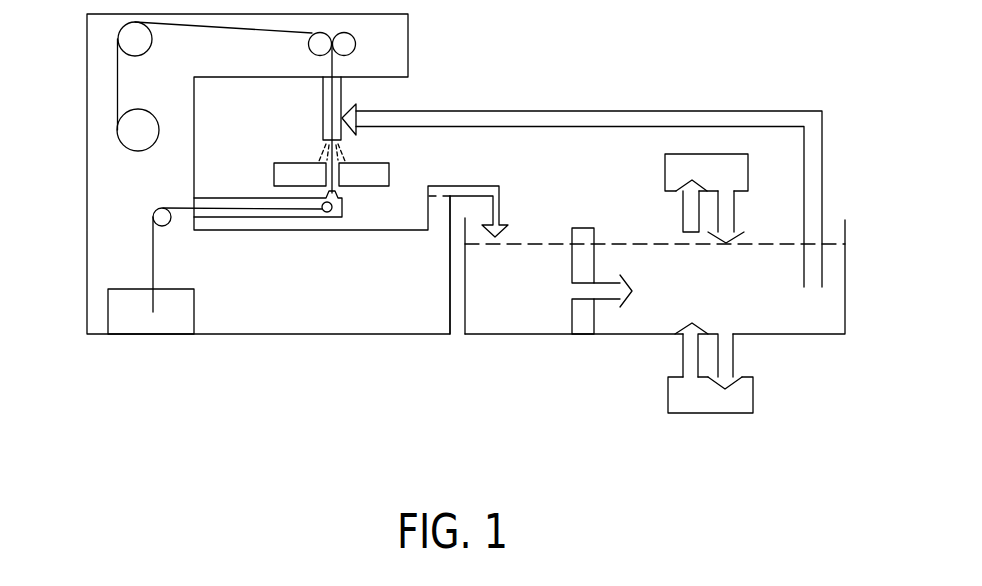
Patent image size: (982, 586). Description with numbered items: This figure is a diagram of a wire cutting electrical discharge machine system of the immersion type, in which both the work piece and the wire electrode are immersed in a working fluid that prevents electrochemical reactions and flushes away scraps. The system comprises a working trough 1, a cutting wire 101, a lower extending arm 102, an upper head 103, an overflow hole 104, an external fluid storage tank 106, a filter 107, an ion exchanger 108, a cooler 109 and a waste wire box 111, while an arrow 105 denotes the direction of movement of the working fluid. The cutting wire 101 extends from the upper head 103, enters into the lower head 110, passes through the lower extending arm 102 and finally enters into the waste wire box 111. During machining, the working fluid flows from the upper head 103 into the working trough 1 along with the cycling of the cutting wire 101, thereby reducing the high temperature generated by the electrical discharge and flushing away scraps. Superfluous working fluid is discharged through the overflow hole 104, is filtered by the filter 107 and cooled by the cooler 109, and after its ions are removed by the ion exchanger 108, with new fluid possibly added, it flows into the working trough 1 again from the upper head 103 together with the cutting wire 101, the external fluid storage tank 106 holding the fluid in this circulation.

The working trough 1 is at (411, 187).
The cutting wire 101 is at (333, 67).
The lower extending arm 102 is at (223, 198).
The upper head 103 is at (321, 143).
The overflow hole 104 is at (437, 198).
The arrow 105 is at (645, 111).
The external fluid storage tank 106 is at (773, 302).
The filter 107 is at (582, 322).
The ion exchanger 108 is at (728, 400).
The cooler 109 is at (733, 169).
The lower head 110 is at (345, 193).
The waste wire box 111 is at (181, 322).